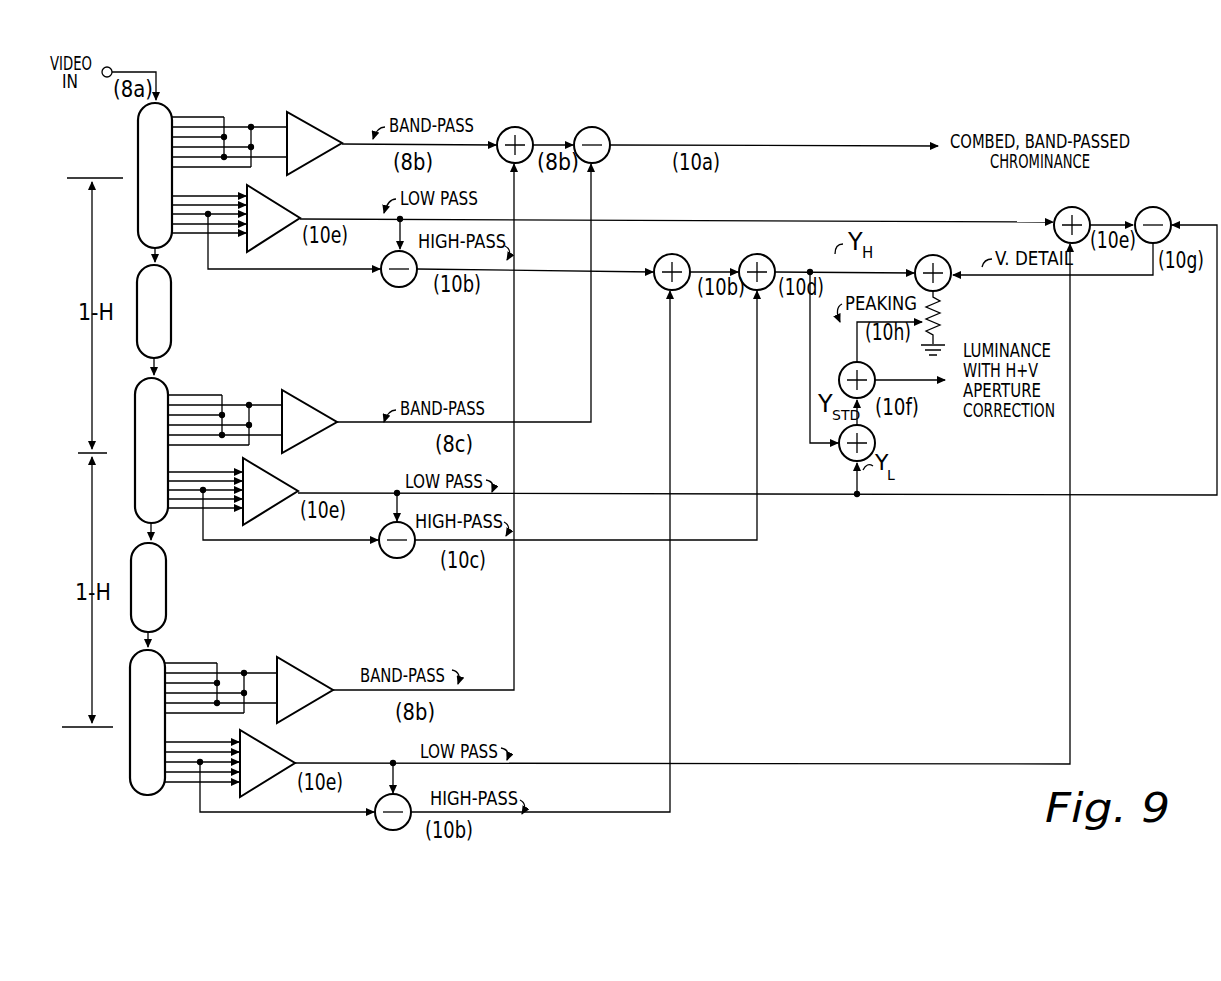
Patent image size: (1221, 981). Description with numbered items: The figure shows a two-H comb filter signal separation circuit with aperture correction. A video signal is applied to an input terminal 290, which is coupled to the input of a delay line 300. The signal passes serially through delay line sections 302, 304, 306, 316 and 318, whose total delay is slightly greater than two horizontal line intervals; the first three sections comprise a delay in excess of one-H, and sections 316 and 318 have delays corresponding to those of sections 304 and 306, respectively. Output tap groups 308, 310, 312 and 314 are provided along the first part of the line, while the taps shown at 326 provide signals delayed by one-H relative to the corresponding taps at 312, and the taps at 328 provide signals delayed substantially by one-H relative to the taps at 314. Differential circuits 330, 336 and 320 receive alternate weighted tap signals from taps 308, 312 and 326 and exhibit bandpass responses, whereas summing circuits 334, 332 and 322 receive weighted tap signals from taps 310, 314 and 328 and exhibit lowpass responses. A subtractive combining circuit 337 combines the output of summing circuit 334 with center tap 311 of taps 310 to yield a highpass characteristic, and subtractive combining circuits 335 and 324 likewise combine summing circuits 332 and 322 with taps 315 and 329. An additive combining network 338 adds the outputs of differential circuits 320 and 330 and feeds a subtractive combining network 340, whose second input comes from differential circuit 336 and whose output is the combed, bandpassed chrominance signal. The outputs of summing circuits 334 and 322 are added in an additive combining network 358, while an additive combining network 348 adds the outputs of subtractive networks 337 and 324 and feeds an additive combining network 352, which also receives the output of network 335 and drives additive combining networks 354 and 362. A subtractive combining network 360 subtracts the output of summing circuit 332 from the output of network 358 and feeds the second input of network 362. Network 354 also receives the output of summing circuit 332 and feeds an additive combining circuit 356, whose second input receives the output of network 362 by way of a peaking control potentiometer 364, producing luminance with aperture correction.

The input terminal 290 is at (111, 67).
The delay line 300 is at (67, 468).
The delay line section 302 is at (137, 119).
The delay line section 304 is at (172, 312).
The delay line section 306 is at (162, 380).
The output tap group 308 is at (206, 109).
The output tap group 310 is at (190, 192).
The center tap 311 is at (206, 265).
The output tap group 312 is at (200, 386).
The output tap group 314 is at (194, 472).
The tap 315 is at (203, 536).
The delay line section 316 is at (167, 590).
The delay line section 318 is at (132, 766).
The differential circuit 320 is at (299, 669).
The summing circuit 322 is at (272, 746).
The subtractive combining circuit 324 is at (384, 798).
The taps 326 is at (192, 657).
The taps 328 is at (182, 744).
The tap 329 is at (200, 808).
The differential circuit 330 is at (307, 121).
The summing circuit 332 is at (297, 483).
The summing circuit 334 is at (289, 201).
The subtractive combining circuit 335 is at (390, 530).
The differential circuit 336 is at (312, 401).
The subtractive combining circuit 337 is at (392, 254).
The additive combining network 338 is at (518, 125).
The subtractive combining network 340 is at (601, 127).
The additive combining network 348 is at (681, 260).
The additive combining network 352 is at (766, 260).
The additive combining network 354 is at (842, 456).
The additive combining circuit 356 is at (871, 372).
The additive combining network 358 is at (1074, 212).
The subtractive combining network 360 is at (1156, 212).
The additive combining network 362 is at (932, 240).
The peaking control potentiometer 364 is at (944, 322).